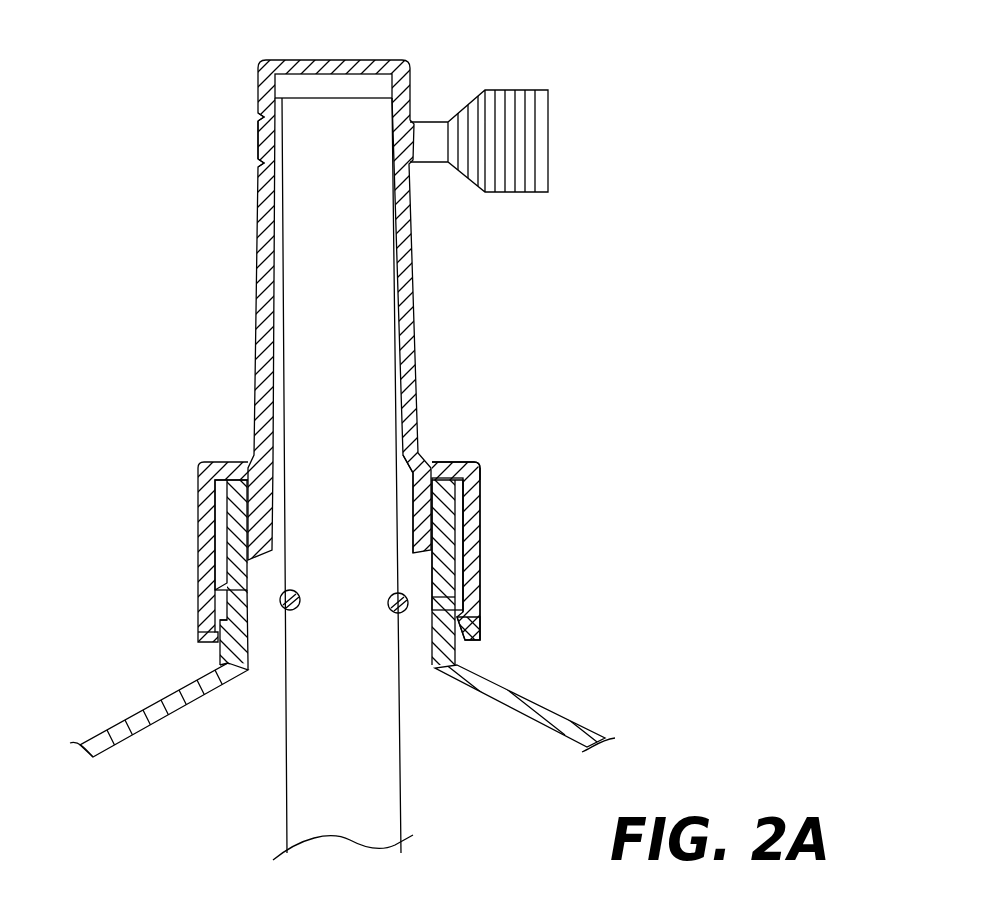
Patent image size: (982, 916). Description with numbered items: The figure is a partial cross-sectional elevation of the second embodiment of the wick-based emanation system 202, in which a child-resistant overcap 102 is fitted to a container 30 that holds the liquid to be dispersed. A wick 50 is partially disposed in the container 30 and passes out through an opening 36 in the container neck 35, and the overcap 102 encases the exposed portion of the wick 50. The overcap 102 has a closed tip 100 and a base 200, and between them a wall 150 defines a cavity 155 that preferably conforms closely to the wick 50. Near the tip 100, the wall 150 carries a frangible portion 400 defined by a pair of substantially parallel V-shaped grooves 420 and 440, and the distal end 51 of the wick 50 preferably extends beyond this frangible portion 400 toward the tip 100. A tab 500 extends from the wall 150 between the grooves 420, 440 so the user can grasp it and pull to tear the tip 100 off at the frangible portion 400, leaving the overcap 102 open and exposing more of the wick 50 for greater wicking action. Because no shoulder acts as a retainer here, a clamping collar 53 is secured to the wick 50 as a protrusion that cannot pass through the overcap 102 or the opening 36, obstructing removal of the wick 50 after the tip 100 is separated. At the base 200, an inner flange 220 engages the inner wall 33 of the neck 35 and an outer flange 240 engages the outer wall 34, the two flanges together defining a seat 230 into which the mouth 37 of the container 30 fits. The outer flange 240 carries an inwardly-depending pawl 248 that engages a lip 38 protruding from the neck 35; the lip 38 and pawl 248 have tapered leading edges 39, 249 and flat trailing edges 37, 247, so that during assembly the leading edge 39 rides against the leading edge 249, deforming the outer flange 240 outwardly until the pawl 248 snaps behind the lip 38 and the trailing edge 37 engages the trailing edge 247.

The tip 100 is at (332, 60).
The distal end of the wick 51 is at (357, 97).
The overcap 102 is at (333, 280).
The wall 150 is at (258, 370).
The cavity 155 is at (407, 323).
The V-shaped groove 420 is at (262, 117).
The frangible portion 400 is at (262, 143).
The V-shaped groove 440 is at (262, 167).
The tab 500 is at (533, 133).
The wick 50 is at (376, 826).
The clamping collar 53 is at (392, 593).
The system 202 is at (636, 316).
The base 200 is at (532, 530).
The seat 230 is at (466, 462).
The inner flange 220 is at (435, 494).
The outer flange 240 is at (468, 525).
The outer wall of the container neck 34 is at (465, 545).
The inner wall of the container neck 33 is at (438, 597).
The mouth / trailing edge of the lip 37 is at (232, 480).
The pawl 248 is at (482, 636).
The opening 36 is at (410, 517).
The tapered leading edge of the lip 39 is at (227, 592).
The container lip 38 is at (230, 605).
The tapered leading edge of the pawl 249 is at (200, 637).
The flat trailing edge of the pawl 247 is at (233, 622).
The neck 35 is at (247, 665).
The container 30 is at (100, 745).